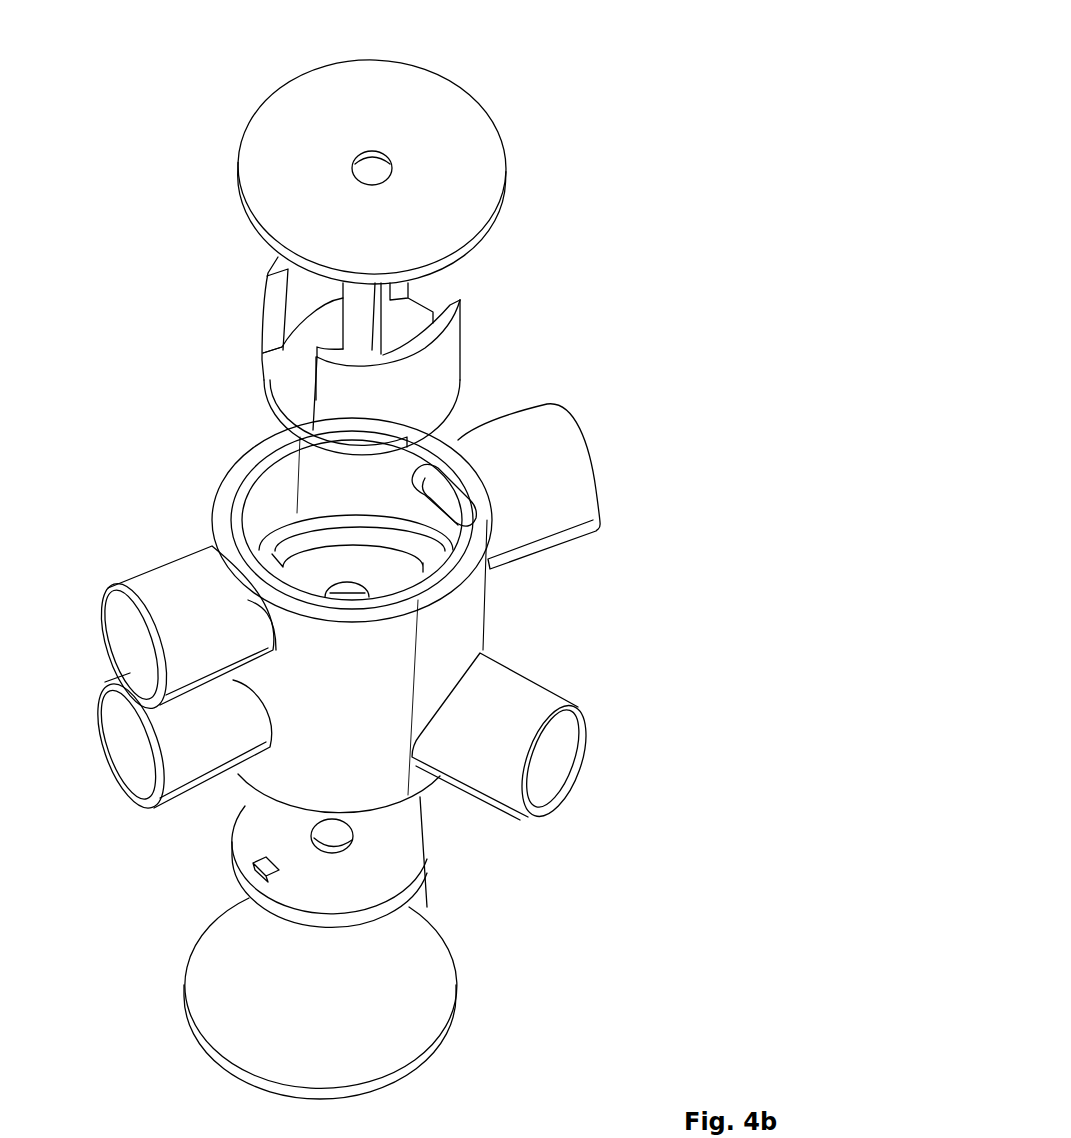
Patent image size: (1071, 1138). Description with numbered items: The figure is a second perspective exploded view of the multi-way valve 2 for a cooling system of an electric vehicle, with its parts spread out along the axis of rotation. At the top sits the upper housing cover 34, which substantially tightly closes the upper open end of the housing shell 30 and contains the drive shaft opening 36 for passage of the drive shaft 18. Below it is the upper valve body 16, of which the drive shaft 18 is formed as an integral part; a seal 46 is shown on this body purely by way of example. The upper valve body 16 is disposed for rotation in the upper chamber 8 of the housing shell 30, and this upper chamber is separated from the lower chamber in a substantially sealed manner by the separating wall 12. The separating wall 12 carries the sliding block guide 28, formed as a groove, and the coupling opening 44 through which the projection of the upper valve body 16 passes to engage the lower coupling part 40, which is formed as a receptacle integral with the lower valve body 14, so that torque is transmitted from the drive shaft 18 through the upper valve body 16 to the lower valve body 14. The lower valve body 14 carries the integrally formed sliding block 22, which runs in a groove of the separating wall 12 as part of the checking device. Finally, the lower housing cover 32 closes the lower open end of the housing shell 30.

The multi-way valve 2 is at (648, 38).
The drive shaft opening 36 is at (494, 166).
The upper housing cover 34 is at (390, 168).
The drive shaft 18 is at (368, 297).
The upper valve body 16 is at (437, 354).
The seal 46 is at (465, 400).
The upper chamber 8 is at (412, 462).
The sliding block guide 28 is at (392, 538).
The separating wall 12 is at (380, 583).
The coupling opening 44 is at (365, 595).
The housing shell 30 is at (467, 619).
The lower valve body 14 is at (403, 827).
The lower coupling part 40 is at (355, 841).
The sliding block 22 is at (280, 868).
The lower housing cover 32 is at (427, 1030).